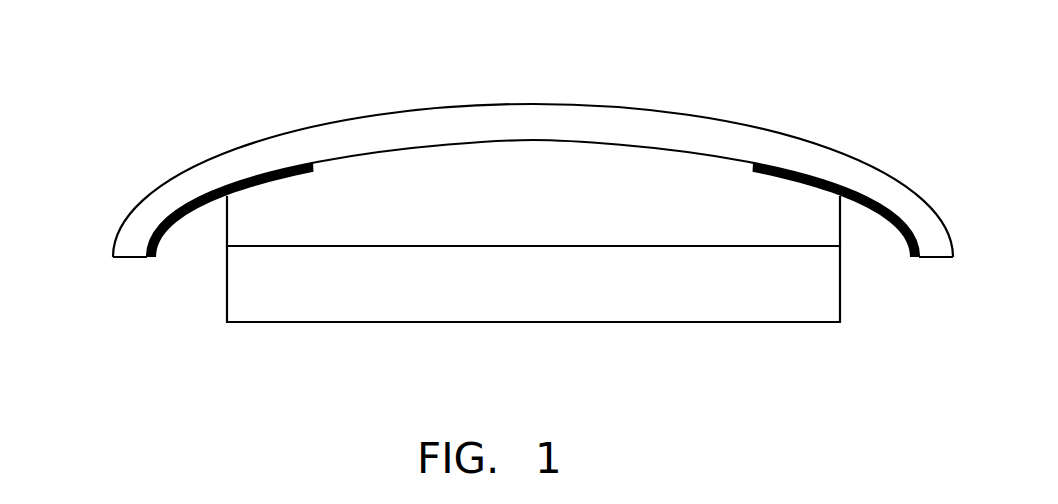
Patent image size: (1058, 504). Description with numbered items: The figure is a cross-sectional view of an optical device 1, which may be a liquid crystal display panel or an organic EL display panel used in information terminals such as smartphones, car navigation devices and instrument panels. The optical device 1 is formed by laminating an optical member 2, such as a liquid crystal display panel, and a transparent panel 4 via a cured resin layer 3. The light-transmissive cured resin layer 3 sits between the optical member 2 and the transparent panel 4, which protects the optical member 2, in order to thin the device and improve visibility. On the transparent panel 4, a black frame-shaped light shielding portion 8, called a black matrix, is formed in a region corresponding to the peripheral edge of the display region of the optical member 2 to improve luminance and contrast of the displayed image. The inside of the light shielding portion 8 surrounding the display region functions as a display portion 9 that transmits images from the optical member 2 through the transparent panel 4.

The optical device 1 is at (71, 140).
The optical member 2 is at (252, 303).
The cured resin layer 3 is at (257, 222).
The transparent panel 4 is at (337, 122).
The light shielding portion 8 is at (280, 183).
The display portion 9 is at (637, 139).